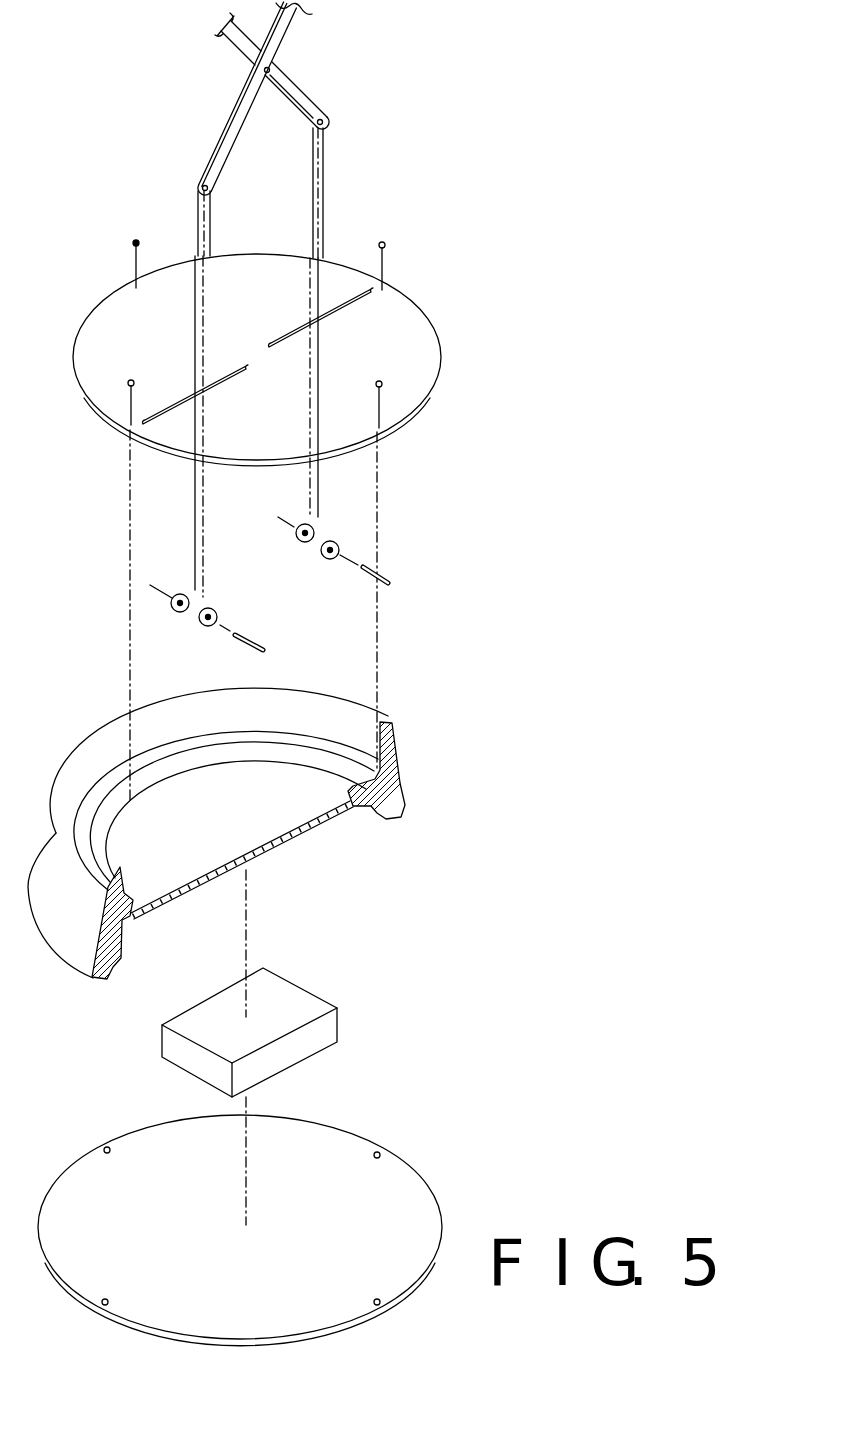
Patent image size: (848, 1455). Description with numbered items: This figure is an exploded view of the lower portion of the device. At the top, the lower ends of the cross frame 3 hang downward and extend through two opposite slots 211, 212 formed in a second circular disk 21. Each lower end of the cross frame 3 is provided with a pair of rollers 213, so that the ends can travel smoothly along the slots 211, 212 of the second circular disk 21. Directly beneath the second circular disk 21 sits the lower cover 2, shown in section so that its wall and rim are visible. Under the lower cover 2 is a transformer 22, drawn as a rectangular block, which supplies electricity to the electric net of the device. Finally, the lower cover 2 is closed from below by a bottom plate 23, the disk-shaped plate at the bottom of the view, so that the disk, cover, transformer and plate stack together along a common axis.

The lower cover 2 is at (392, 772).
The cross frame 3 is at (295, 22).
The second circular disk 21 is at (422, 385).
The transformer 22 is at (288, 1000).
The bottom plate 23 is at (348, 1158).
The slot 211 is at (340, 300).
The slot 212 is at (164, 424).
The rollers 213 is at (175, 608).